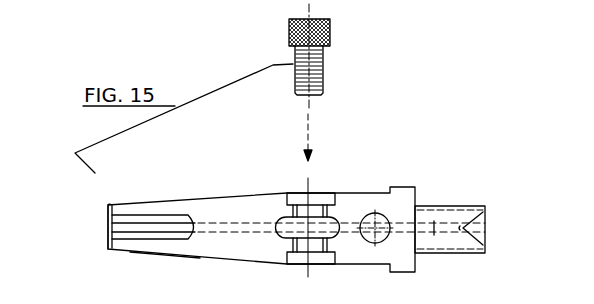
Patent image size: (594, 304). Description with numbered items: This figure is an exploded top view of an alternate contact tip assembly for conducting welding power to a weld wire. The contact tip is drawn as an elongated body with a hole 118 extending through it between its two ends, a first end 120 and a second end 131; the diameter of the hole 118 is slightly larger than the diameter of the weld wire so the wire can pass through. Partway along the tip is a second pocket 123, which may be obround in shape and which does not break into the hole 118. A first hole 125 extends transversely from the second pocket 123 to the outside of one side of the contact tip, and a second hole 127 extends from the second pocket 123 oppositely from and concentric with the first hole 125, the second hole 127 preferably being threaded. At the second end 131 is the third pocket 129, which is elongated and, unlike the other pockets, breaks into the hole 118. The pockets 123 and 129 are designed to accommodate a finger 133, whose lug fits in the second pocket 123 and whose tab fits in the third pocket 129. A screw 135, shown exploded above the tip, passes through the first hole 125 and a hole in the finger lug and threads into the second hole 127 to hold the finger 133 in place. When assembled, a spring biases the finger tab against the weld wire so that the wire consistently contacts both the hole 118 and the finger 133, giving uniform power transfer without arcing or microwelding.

The hole 118 is at (436, 200).
The contact tip first end 120 is at (485, 228).
The second pocket 123 is at (313, 240).
The first hole 125 is at (307, 203).
The second hole 127 is at (312, 247).
The third pocket 129 is at (140, 238).
The contact tip second end 131 is at (107, 243).
The finger 133 is at (193, 303).
The screw 135 is at (323, 70).